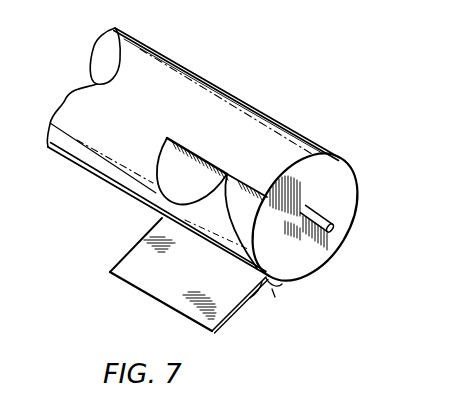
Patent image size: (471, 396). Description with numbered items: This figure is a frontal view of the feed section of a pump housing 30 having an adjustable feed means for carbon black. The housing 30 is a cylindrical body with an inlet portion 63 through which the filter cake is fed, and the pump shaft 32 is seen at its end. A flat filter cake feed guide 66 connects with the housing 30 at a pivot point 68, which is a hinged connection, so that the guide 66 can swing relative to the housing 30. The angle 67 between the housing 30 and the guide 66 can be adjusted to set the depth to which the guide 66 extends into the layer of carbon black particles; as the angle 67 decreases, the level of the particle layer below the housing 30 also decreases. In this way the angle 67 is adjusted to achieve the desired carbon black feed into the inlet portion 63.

The pump housing 30 is at (266, 112).
The pump shaft 32 is at (333, 228).
The inlet portion 63 is at (168, 165).
The guide 66 is at (247, 297).
The angle 67 is at (258, 298).
The pivot point 68 is at (266, 277).